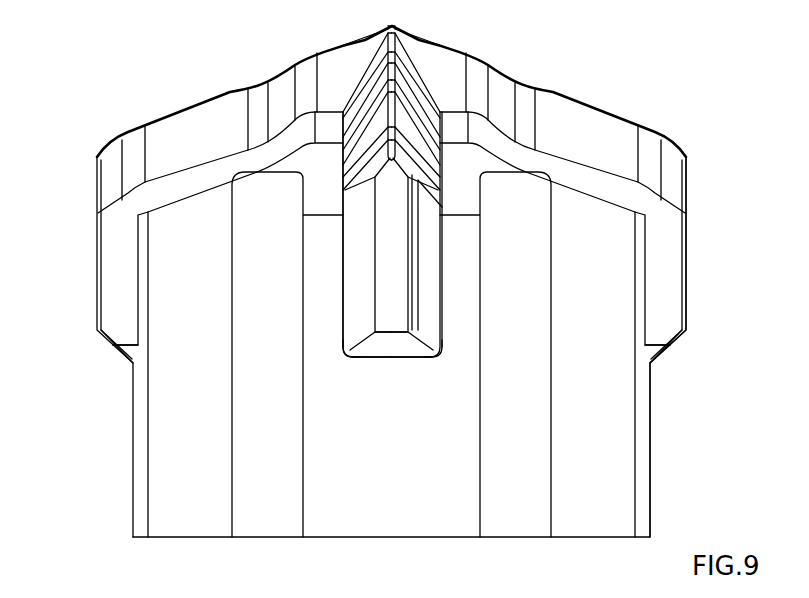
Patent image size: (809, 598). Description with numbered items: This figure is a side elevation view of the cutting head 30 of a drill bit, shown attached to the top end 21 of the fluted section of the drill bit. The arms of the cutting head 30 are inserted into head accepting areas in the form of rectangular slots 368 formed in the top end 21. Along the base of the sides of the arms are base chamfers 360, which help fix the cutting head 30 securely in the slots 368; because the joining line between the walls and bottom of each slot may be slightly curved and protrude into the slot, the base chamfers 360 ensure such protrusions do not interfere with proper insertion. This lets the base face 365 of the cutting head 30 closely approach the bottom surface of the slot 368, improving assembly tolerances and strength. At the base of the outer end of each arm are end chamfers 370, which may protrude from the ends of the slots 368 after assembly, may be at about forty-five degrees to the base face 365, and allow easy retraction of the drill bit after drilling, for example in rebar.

The cutting head 30 is at (585, 107).
The top end 21 is at (650, 440).
The end chamfers 370 is at (113, 345).
The rectangular slots 368 is at (342, 285).
The base face 365 is at (405, 358).
The base chamfers 360 is at (355, 368).